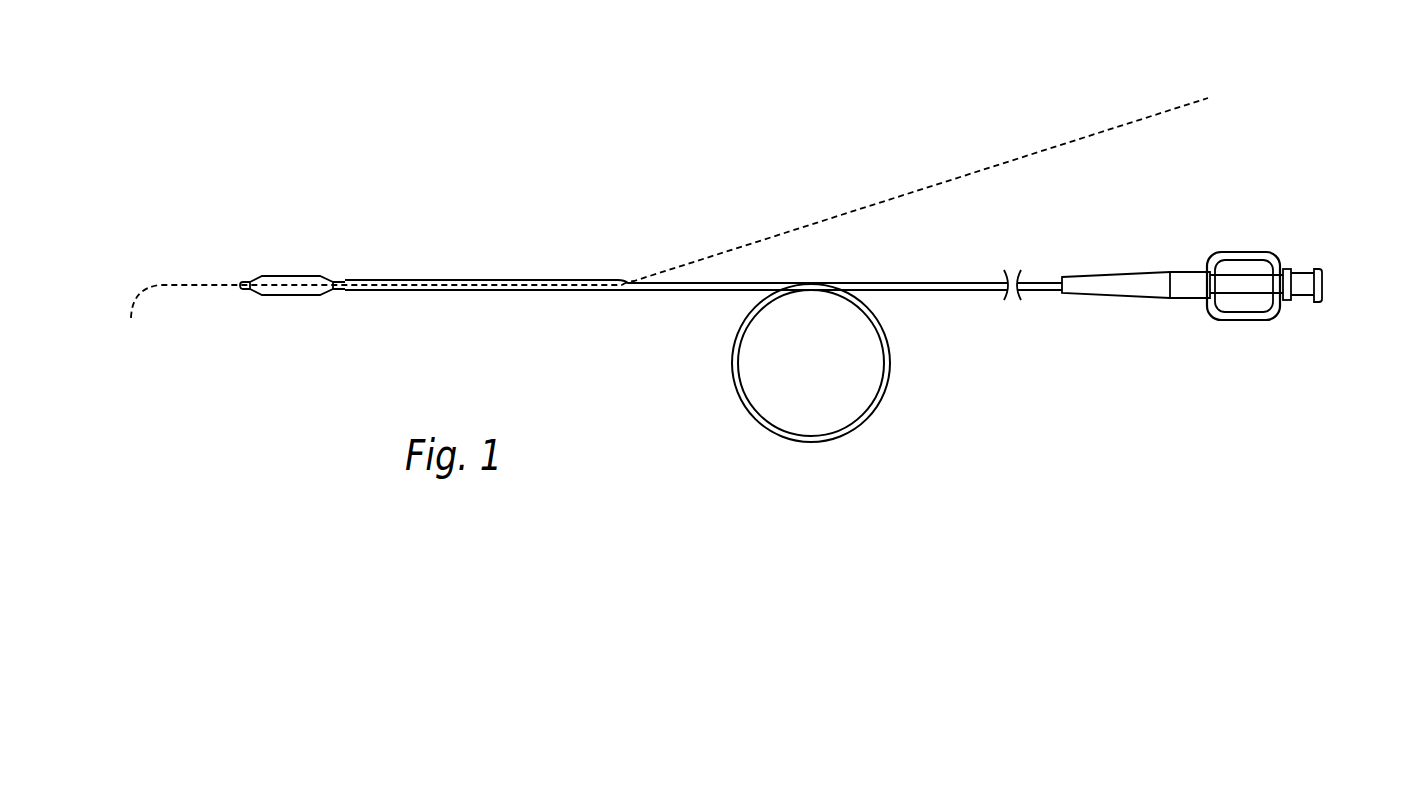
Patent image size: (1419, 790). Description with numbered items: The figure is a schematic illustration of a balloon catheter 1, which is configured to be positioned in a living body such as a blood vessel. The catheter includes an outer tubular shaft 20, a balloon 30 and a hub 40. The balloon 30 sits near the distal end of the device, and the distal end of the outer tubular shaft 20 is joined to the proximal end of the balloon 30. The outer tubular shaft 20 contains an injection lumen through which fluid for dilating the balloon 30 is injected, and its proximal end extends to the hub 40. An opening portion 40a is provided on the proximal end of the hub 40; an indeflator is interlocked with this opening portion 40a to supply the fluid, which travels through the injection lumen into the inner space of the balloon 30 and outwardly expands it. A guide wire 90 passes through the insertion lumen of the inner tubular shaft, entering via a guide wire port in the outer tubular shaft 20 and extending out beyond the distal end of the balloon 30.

The balloon catheter 1 is at (290, 136).
The outer tubular shaft 20 is at (566, 280).
The balloon 30 is at (291, 276).
The hub 40 is at (1188, 285).
The opening portion 40a is at (1324, 284).
The guide wire 90 is at (1112, 125).